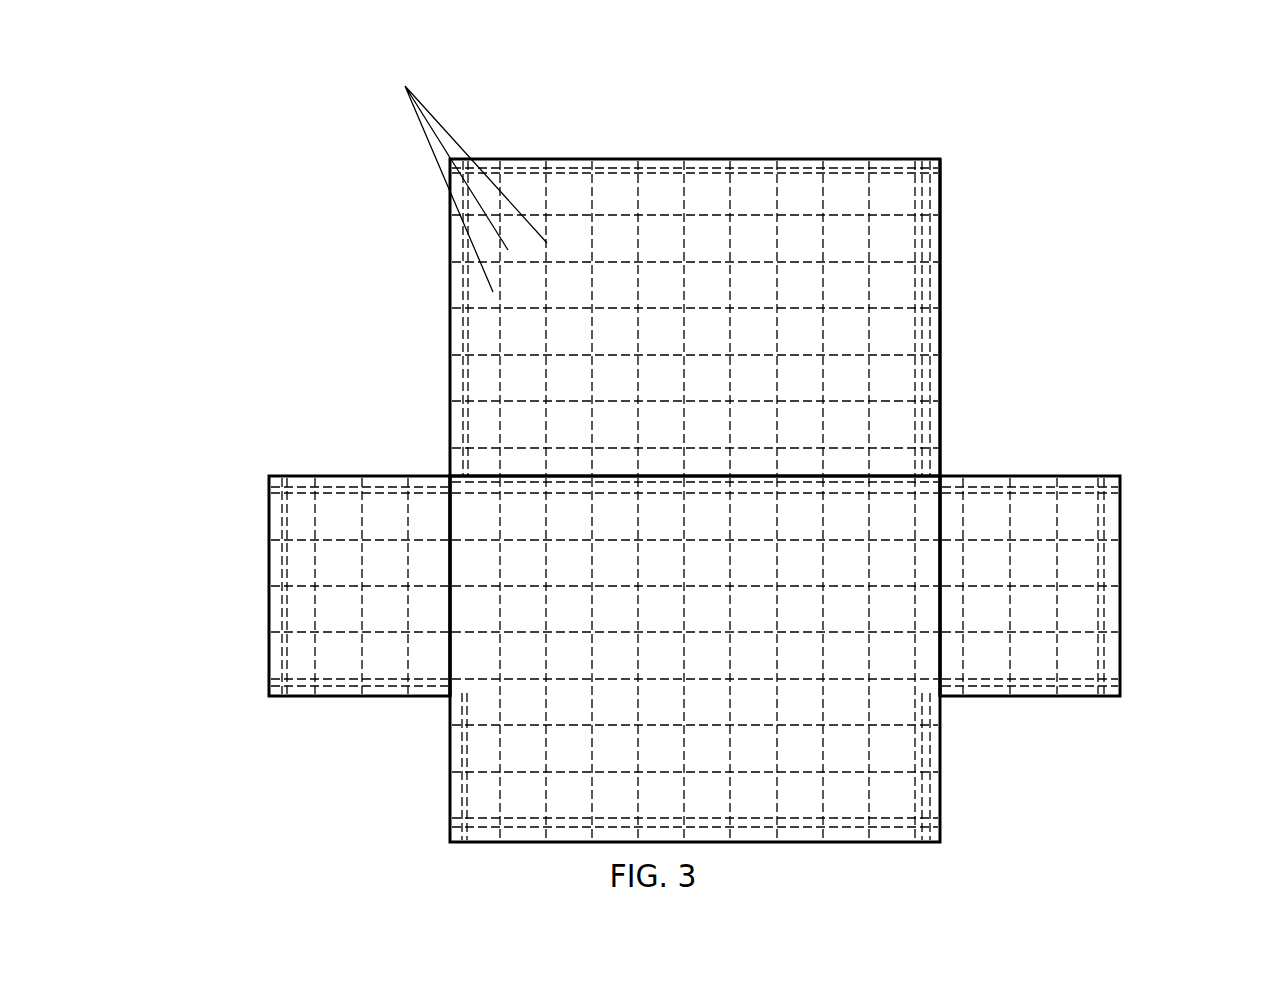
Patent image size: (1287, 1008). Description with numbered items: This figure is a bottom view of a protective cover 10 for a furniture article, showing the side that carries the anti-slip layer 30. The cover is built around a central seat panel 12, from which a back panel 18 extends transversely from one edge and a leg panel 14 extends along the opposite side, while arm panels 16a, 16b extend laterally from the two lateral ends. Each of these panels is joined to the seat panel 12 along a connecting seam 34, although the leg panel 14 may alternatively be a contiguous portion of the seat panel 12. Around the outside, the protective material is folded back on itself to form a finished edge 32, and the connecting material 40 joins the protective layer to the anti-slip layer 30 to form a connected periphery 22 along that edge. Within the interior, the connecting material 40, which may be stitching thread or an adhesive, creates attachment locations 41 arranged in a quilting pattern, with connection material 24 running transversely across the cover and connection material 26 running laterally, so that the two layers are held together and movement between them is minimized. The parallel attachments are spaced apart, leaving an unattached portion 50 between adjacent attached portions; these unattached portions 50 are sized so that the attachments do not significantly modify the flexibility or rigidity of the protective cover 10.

The protective cover 10 is at (378, 265).
The seat panel 12 is at (568, 605).
The leg panel 14 is at (893, 745).
The arm panel 16a is at (1065, 573).
The arm panel 16b is at (380, 567).
The back panel 18 is at (606, 190).
The connected periphery 22 is at (942, 254).
The connection material 24 is at (863, 201).
The connection material 26 is at (783, 220).
The anti-slip layer 30 is at (898, 353).
The finished edge 32 is at (942, 412).
The connecting seam 34 is at (452, 477).
The connecting material 40 is at (702, 215).
The attachment locations 41 is at (752, 213).
The unattached portion 50 is at (464, 173).